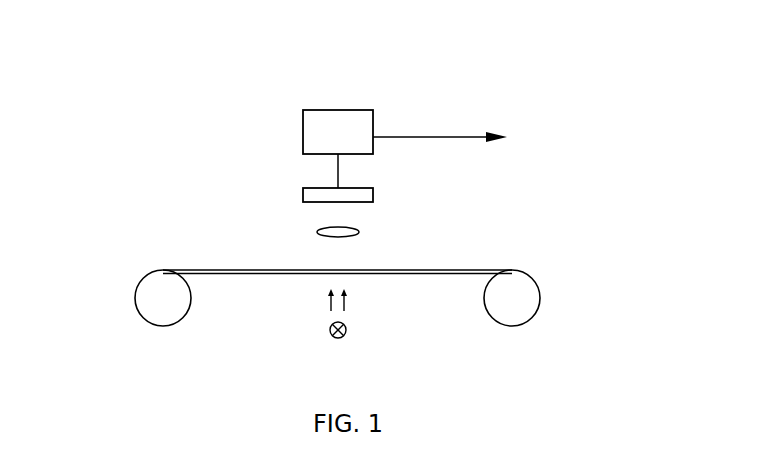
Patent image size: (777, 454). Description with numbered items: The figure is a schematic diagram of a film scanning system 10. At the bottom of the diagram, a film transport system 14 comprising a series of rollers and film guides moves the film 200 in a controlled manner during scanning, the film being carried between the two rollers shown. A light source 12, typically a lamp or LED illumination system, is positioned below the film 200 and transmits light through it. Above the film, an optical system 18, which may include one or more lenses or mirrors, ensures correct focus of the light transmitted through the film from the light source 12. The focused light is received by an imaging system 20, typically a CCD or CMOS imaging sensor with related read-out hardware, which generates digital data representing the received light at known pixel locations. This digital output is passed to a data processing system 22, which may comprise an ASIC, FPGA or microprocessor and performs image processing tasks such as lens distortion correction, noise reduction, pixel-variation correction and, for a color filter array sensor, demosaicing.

The film scanning system 10 is at (562, 96).
The light source 12 is at (316, 341).
The film transport system 14 is at (158, 313).
The optical system 18 is at (318, 230).
The imaging system 20 is at (302, 192).
The data processing system 22 is at (344, 119).
The film 200 is at (440, 269).